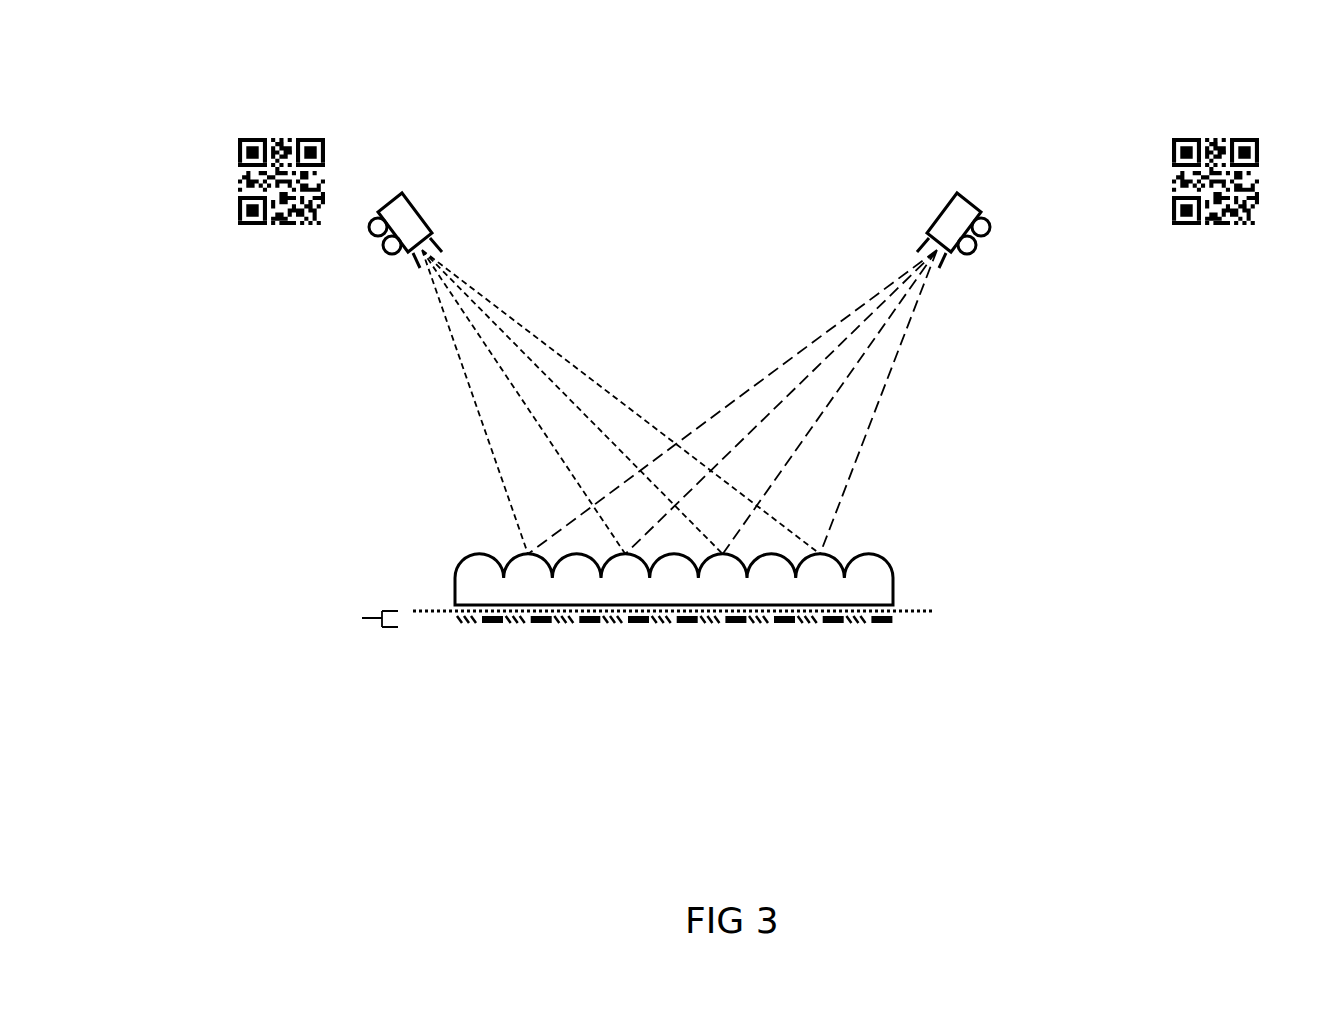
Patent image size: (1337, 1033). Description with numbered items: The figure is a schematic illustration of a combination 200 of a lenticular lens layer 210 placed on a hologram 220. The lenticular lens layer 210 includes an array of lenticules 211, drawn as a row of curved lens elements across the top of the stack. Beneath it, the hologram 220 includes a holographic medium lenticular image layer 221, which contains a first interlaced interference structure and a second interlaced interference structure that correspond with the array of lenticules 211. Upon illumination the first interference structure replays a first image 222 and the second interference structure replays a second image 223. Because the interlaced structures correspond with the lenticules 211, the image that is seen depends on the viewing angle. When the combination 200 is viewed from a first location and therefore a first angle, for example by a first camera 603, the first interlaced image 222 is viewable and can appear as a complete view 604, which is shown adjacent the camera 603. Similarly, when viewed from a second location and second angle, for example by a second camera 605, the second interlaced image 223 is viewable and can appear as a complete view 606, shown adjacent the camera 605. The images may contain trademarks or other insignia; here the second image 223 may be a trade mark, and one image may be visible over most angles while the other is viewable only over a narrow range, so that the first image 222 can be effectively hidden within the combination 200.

The combination 200 is at (719, 401).
The lenticular lens layer 210 is at (783, 537).
The array of lenticules 211 is at (731, 530).
The hologram 220 is at (675, 617).
The lenticular image layer 221 is at (736, 579).
The first image 222 is at (713, 659).
The second image 223 is at (688, 690).
The first camera 603 is at (594, 338).
The complete view of first interlaced image 604 is at (338, 146).
The second camera 605 is at (759, 346).
The complete view of second interlaced image 606 is at (1168, 131).